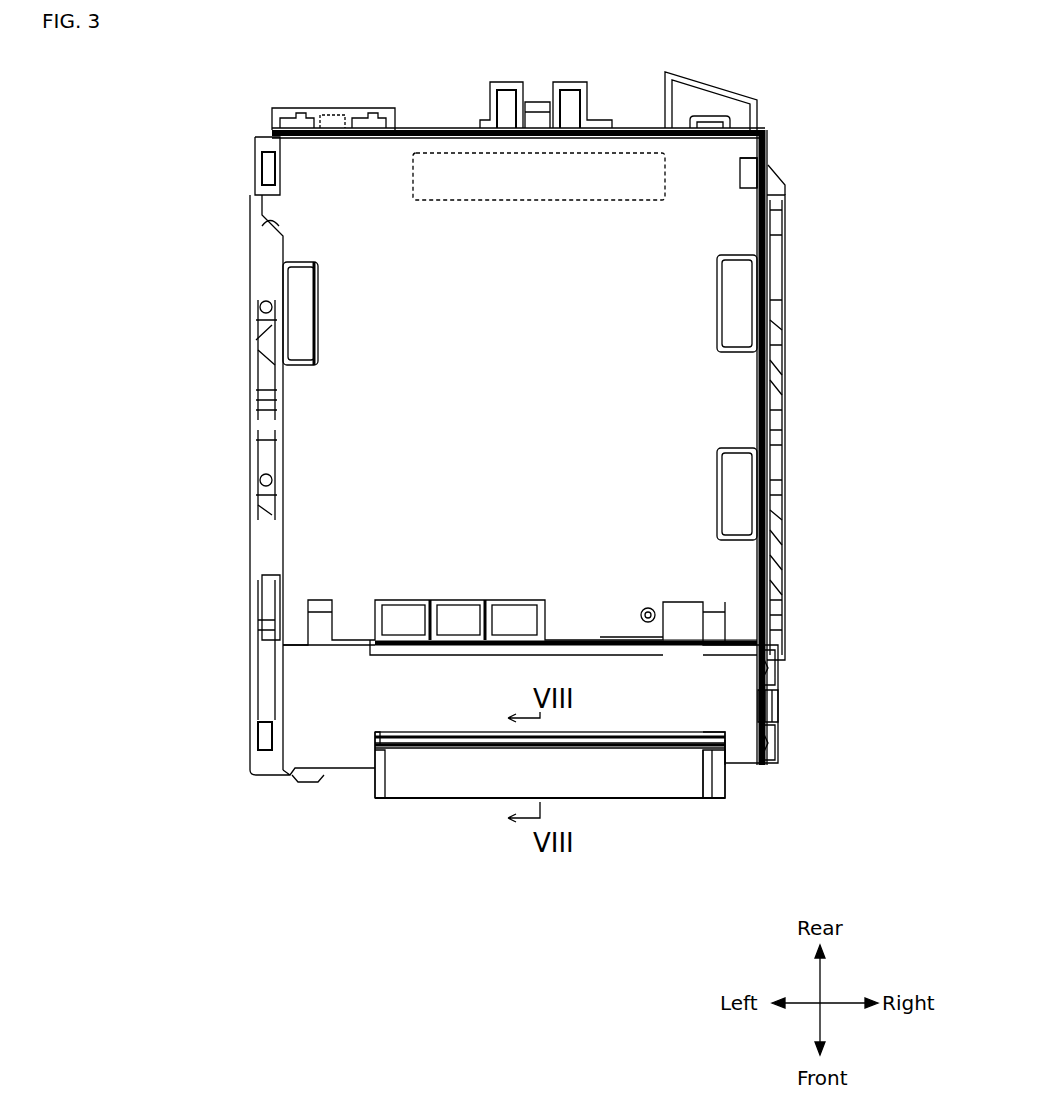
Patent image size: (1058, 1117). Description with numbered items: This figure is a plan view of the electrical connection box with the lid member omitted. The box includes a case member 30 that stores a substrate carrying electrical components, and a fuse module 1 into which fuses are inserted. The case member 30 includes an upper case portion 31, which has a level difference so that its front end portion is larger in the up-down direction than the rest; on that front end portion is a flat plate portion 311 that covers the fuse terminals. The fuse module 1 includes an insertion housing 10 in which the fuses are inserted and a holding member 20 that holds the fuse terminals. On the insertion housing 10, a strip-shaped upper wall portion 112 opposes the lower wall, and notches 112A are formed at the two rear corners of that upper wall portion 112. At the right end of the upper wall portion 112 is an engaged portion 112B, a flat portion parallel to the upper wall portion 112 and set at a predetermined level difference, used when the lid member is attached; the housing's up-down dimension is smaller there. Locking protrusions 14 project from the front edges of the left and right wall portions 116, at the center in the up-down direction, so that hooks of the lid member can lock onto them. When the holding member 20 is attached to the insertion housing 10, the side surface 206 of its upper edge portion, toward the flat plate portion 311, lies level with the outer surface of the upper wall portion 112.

The fuse module 1 is at (420, 880).
The insertion housing 10 is at (648, 822).
The locking protrusion 14 is at (725, 800).
The holding member 20 is at (728, 722).
The case member 30 is at (790, 152).
The upper case portion 31 is at (280, 550).
The upper wall portion 112 is at (590, 800).
The notch 112A is at (738, 765).
The engaged portion 112B is at (713, 800).
The wall portion 116 is at (732, 788).
The side surface 206 is at (730, 748).
The flat plate portion 311 is at (680, 688).